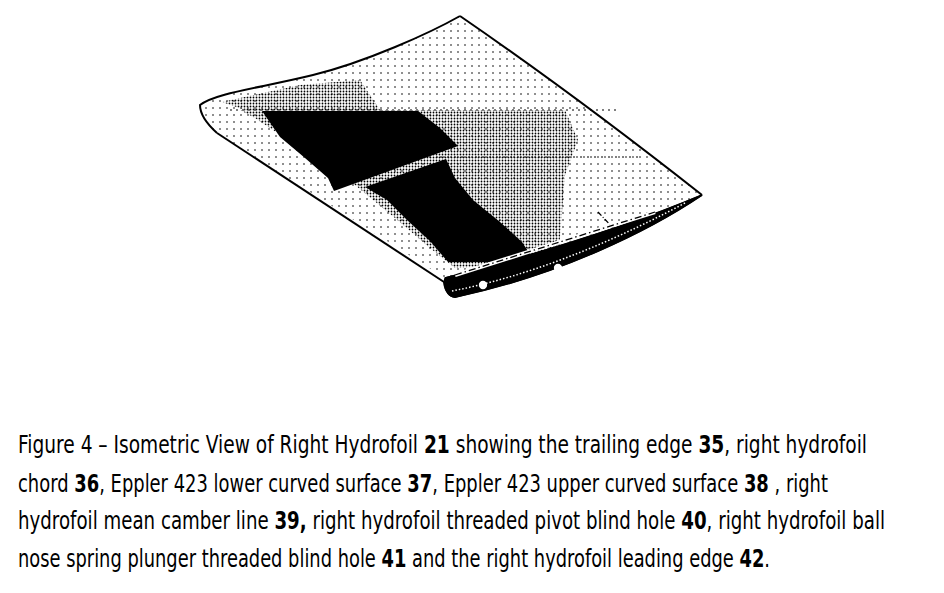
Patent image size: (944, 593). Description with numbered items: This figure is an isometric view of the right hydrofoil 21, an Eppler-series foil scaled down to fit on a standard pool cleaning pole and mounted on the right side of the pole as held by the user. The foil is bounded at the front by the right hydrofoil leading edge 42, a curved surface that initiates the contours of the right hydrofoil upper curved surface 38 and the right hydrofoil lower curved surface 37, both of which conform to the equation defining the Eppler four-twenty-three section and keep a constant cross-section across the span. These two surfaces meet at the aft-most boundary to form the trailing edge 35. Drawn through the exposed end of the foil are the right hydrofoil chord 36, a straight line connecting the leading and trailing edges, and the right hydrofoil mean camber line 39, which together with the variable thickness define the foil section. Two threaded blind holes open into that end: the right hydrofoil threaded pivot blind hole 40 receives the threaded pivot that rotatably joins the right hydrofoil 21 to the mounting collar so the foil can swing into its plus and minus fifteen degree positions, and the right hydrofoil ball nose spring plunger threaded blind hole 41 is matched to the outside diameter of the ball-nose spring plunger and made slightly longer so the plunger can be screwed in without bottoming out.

The right hydrofoil 21 is at (457, 150).
The trailing edge 35 is at (592, 110).
The right hydrofoil chord 36 is at (655, 212).
The right hydrofoil Eppler 423 lower curved surface 37 is at (652, 231).
The right hydrofoil Eppler 423 upper curved surface 38 is at (620, 247).
The right hydrofoil mean camber line 39 is at (593, 262).
The right hydrofoil threaded pivot blind hole 40 is at (559, 273).
The right hydrofoil ball nose spring plunger threaded blind hole 41 is at (484, 290).
The right hydrofoil leading edge 42 is at (400, 259).